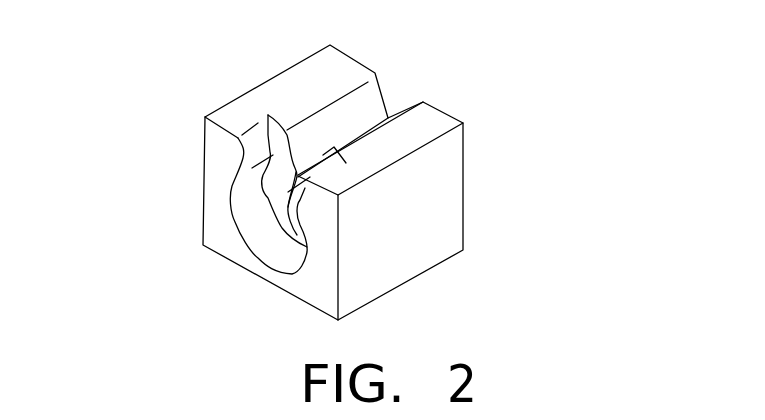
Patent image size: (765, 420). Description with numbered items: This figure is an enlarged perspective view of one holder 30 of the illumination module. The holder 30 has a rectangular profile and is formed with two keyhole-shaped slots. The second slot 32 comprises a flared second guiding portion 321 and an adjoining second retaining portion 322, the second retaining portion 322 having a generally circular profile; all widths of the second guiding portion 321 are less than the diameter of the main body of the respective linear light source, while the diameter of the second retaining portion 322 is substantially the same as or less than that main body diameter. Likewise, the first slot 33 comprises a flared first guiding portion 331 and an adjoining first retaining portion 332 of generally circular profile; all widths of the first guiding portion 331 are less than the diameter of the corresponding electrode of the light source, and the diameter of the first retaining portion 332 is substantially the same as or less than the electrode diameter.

The holder 30 is at (478, 100).
The second slot 32 is at (186, 187).
The second guiding portion 321 is at (270, 151).
The second retaining portion 322 is at (278, 253).
The first slot 33 is at (467, 154).
The first guiding portion 331 is at (347, 120).
The first retaining portion 332 is at (290, 192).